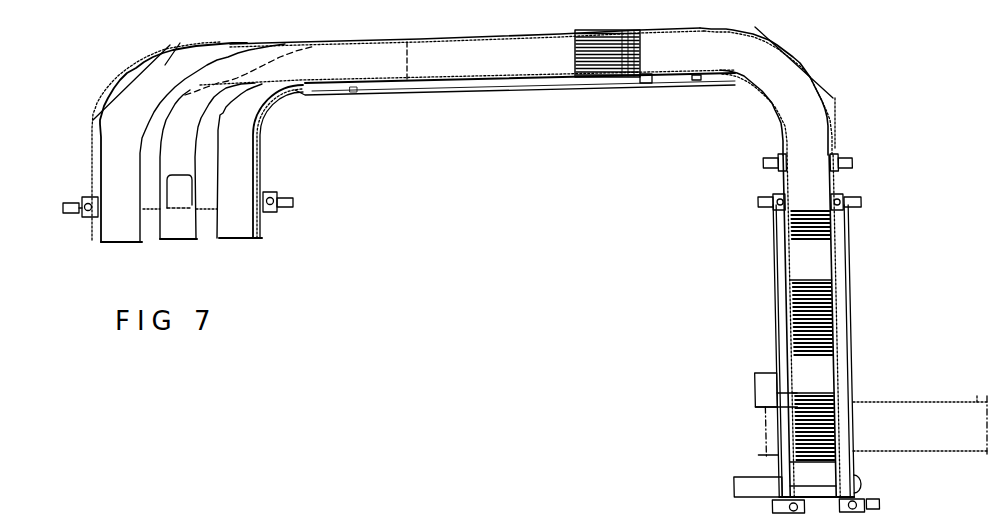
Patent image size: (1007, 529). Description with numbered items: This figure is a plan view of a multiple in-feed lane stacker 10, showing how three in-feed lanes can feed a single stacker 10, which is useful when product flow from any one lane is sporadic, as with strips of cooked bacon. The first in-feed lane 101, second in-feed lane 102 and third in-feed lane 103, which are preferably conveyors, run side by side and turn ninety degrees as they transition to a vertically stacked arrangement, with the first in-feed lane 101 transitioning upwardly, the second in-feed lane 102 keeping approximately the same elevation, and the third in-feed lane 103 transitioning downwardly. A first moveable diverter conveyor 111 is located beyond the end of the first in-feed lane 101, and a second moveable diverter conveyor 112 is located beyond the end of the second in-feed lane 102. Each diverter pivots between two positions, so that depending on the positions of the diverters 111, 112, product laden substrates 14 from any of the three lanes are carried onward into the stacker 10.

The stacker 10 is at (897, 375).
The product laden substrates 14 is at (193, 210).
The first in-feed lane 101 is at (176, 246).
The second in-feed lane 102 is at (232, 240).
The third in-feed lane 103 is at (118, 246).
The first moveable diverter conveyor 111 is at (620, 65).
The second moveable diverter conveyor 112 is at (488, 43).